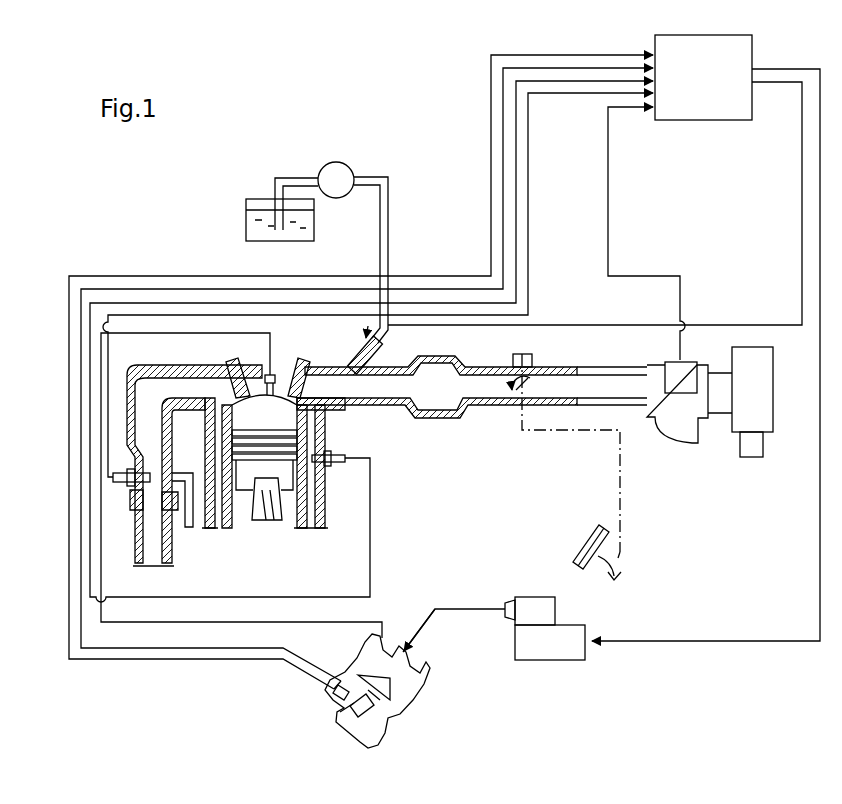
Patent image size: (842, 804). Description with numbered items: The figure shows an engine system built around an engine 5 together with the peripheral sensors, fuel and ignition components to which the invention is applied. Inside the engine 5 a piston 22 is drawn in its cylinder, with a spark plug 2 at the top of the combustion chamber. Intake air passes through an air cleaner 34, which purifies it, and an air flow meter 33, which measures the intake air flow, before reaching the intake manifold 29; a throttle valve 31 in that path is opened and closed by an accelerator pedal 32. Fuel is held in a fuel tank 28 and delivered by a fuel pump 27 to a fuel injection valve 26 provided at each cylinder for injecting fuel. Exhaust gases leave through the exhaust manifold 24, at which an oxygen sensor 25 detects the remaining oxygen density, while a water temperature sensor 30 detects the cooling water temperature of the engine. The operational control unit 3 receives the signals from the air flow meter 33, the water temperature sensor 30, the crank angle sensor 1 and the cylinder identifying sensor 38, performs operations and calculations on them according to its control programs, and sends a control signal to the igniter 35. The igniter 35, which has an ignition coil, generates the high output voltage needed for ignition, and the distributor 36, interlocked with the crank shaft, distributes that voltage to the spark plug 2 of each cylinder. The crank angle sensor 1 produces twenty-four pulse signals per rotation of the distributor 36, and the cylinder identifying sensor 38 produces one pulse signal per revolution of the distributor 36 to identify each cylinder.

The crank angle sensor 1 is at (347, 690).
The spark plug 2 is at (278, 366).
The operational control unit 3 is at (720, 36).
The engine 5 is at (400, 499).
The piston 22 is at (287, 487).
The exhaust manifold 24 is at (165, 395).
The oxygen sensor 25 is at (120, 485).
The fuel injection valve 26 is at (374, 348).
The fuel pump 27 is at (352, 168).
The fuel tank 28 is at (248, 198).
The intake manifold 29 is at (383, 390).
The water temperature sensor 30 is at (340, 453).
The throttle valve 31 is at (508, 387).
The accelerator pedal 32 is at (580, 543).
The air flow meter 33 is at (673, 443).
The air cleaner 34 is at (773, 402).
The igniter 35 is at (563, 665).
The distributor 36 is at (412, 713).
The cylinder identifying sensor 38 is at (333, 704).